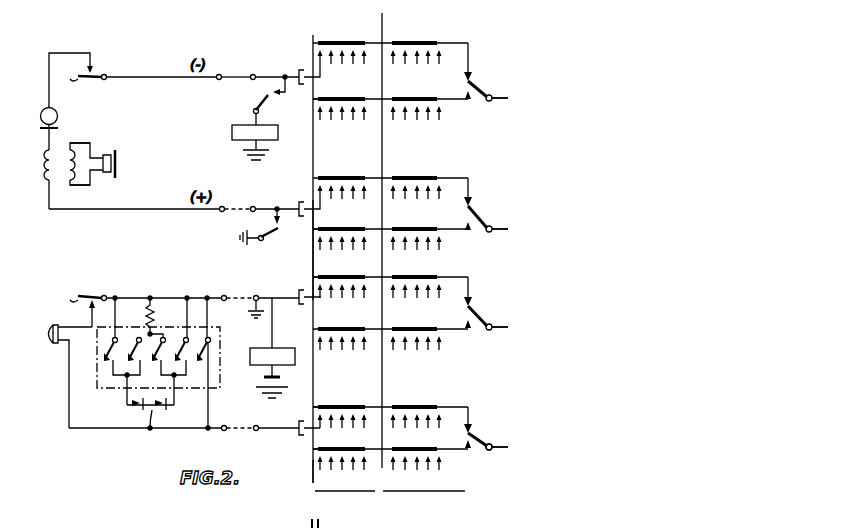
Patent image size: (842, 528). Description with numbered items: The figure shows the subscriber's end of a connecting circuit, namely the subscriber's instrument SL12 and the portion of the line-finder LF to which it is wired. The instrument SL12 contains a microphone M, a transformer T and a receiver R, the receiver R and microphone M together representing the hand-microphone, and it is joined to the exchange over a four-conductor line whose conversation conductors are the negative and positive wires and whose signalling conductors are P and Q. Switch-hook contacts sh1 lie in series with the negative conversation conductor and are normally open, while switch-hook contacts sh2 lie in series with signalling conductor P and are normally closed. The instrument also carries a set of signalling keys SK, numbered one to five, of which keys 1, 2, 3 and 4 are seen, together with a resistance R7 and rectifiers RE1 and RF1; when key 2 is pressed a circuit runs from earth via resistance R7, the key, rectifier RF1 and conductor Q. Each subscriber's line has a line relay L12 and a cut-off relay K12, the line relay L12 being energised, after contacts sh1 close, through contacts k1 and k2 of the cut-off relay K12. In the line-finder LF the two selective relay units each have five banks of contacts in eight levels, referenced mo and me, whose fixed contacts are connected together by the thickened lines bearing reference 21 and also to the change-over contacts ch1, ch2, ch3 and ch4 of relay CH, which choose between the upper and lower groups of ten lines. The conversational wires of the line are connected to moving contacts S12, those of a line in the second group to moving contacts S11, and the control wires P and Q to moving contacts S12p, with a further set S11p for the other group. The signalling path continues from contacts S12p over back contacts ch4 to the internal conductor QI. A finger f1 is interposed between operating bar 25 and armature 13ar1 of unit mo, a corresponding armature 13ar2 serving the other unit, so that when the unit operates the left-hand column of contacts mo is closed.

The fixed contacts 21 is at (395, 43).
The operating bar 25 is at (313, 247).
The signalling key 1 is at (507, 94).
The signalling key 2 is at (507, 230).
The signalling key 3 is at (507, 328).
The signalling key 4 is at (507, 449).
The change-over contact ch1 is at (486, 83).
The change-over contact ch2 is at (485, 216).
The change-over contact ch3 is at (486, 315).
The change-over contact ch4 is at (486, 440).
The internal conductor QI is at (497, 439).
The moving contacts S12 is at (313, 47).
The moving contacts S11 is at (313, 109).
The moving contacts S11p is at (322, 252).
The moving contacts S12p is at (324, 290).
The line-finder LF is at (384, 156).
The banks of contacts mo is at (362, 375).
The banks of contacts me is at (434, 375).
The finger f1 is at (306, 486).
The armature 13ar1 is at (333, 493).
The armature 13ar2 is at (396, 492).
The switch-hook contacts sh1 is at (100, 72).
The switch-hook contacts sh2 is at (88, 289).
The microphone M is at (58, 115).
The transformer T is at (59, 175).
The receiver R is at (116, 164).
The subscriber's instrument SL12 is at (101, 152).
The relay contact k1 is at (258, 95).
The relay contact k2 is at (262, 226).
The line relay L12 is at (223, 143).
The cut-off relay K12 is at (266, 347).
The signalling conductor P is at (273, 296).
The signalling conductor Q is at (275, 418).
The resistance R7 is at (151, 322).
The signalling keys SK is at (104, 386).
The rectifier RE1 is at (135, 410).
The rectifier RF1 is at (163, 410).